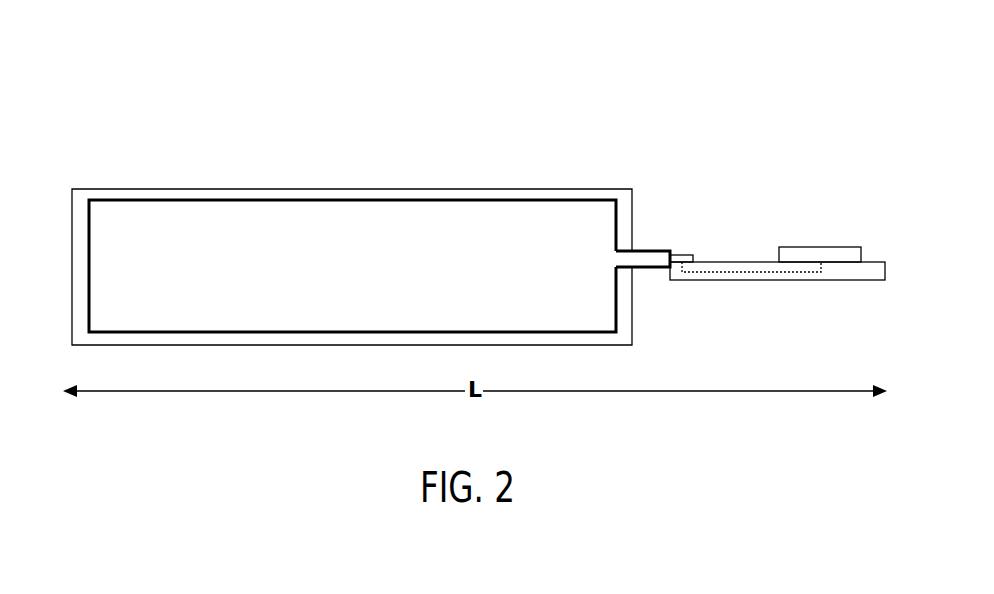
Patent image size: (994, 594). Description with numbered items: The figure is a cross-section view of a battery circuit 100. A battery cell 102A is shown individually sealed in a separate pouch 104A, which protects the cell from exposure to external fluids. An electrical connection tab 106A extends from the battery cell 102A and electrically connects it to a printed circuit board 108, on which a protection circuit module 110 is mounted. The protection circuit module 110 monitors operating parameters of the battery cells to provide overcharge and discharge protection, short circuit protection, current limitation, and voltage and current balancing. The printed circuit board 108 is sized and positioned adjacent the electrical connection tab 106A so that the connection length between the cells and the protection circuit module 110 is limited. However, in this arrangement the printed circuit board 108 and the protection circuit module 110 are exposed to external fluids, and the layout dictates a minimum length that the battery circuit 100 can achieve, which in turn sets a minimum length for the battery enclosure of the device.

The battery circuit 100 is at (788, 92).
The battery cell 102A is at (165, 200).
The pouch 104A is at (353, 189).
The electrical connection tab 106A is at (657, 234).
The printed circuit board 108 is at (755, 280).
The protection circuit module 110 is at (828, 246).